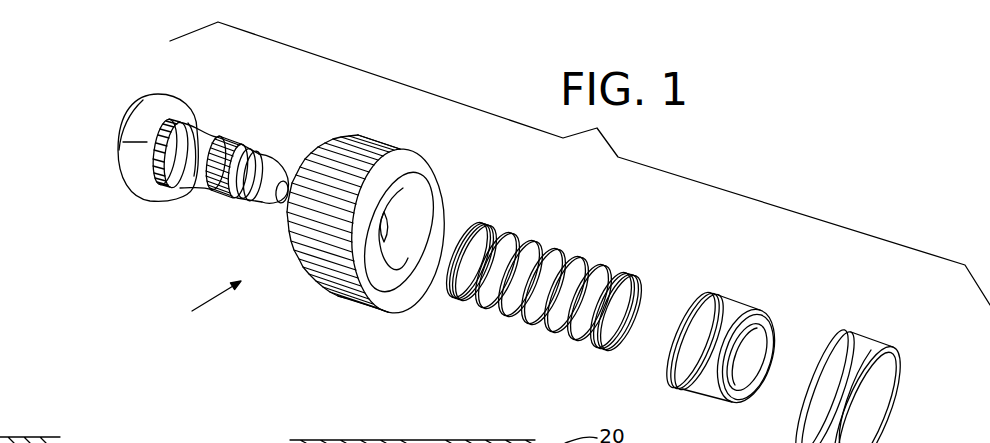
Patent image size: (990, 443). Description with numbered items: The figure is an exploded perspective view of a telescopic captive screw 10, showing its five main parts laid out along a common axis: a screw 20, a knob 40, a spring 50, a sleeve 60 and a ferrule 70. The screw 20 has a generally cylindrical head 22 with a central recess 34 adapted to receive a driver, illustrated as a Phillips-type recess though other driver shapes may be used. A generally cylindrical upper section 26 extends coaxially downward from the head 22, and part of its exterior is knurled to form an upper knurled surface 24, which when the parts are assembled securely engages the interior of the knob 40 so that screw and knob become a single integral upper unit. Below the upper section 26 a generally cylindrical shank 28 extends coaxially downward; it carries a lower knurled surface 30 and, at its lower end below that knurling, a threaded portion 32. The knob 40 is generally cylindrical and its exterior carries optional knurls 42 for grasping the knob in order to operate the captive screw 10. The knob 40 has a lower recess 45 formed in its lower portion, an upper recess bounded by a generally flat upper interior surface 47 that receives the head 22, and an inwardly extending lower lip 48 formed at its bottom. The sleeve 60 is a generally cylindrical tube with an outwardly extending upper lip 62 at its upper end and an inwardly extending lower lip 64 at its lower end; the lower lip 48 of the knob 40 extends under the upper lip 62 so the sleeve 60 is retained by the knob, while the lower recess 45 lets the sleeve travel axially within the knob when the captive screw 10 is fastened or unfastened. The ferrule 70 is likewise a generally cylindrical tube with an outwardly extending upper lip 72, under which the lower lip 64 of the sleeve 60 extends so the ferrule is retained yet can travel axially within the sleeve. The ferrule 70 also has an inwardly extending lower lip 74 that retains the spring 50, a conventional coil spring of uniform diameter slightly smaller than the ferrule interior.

The captive screw 10 is at (203, 306).
The screw 20 is at (147, 108).
The head 22 is at (123, 142).
The upper knurled surface 24 is at (158, 165).
The upper section 26 is at (176, 176).
The shank 28 is at (197, 176).
The lower knurled surface 30 is at (232, 150).
The threaded portion 32 is at (263, 162).
The central recess 34 is at (427, 442).
The knob 40 is at (391, 236).
The knurls 42 is at (310, 262).
The lower recess 45 is at (408, 260).
The upper interior surface 47 is at (397, 225).
The lower lip 48 is at (416, 292).
The spring 50 is at (555, 248).
The sleeve 60 is at (720, 342).
The upper lip 62 is at (683, 310).
The lower lip 64 is at (742, 395).
The ferrule 70 is at (869, 356).
The upper lip 72 is at (825, 347).
The lower lip 74 is at (893, 408).